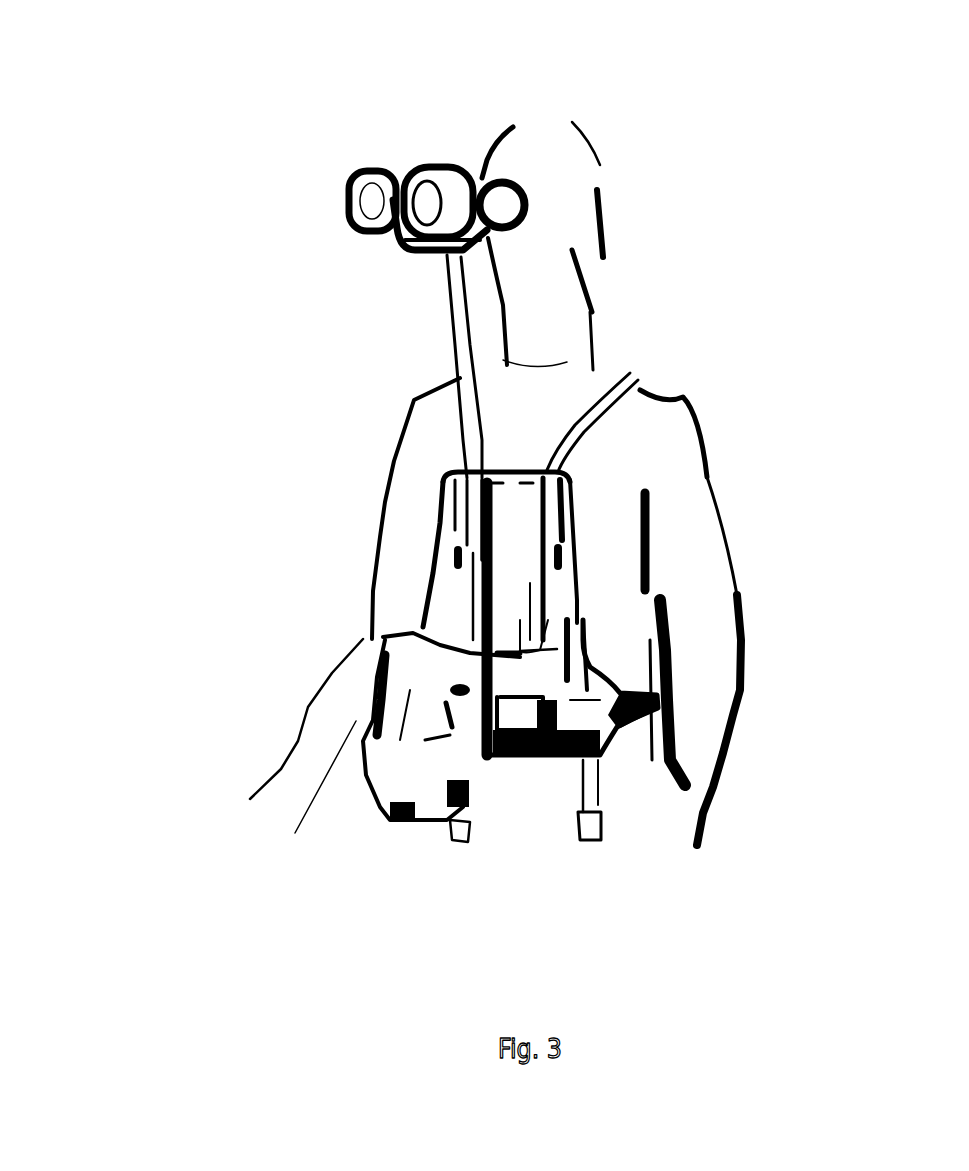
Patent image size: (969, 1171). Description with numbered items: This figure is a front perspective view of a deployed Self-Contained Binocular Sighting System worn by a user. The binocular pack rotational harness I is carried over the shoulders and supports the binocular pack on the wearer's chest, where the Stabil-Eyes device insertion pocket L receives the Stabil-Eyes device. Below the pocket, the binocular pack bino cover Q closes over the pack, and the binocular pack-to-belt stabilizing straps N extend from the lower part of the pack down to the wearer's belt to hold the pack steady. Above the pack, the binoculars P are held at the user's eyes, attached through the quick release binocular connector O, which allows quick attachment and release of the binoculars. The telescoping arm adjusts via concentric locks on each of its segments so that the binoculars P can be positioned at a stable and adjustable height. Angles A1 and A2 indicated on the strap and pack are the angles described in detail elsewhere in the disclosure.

The binoculars P is at (428, 193).
The quick release binocular connector O is at (420, 233).
The angle A1 is at (445, 261).
The binocular pack rotational harness I is at (623, 377).
The Stabil-Eyes device insertion pocket L is at (508, 537).
The angle A2 is at (528, 713).
The binocular pack bino cover Q is at (450, 743).
The binocular pack-to-belt stabilizing straps N is at (627, 713).